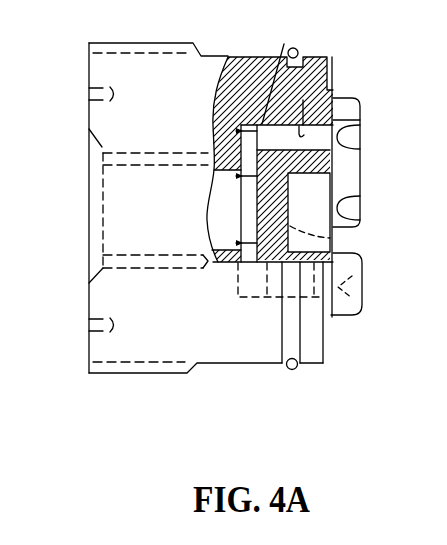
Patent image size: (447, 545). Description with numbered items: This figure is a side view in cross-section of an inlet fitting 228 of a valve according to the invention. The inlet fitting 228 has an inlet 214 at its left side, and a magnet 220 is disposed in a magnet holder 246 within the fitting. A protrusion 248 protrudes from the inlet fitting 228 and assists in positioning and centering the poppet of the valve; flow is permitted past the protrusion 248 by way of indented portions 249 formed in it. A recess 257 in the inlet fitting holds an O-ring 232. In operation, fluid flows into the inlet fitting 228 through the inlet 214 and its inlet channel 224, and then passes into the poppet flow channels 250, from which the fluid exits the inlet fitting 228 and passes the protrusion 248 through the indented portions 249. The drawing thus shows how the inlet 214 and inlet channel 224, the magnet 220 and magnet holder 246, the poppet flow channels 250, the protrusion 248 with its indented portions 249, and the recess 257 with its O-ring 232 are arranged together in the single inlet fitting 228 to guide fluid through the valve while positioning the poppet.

The inlet 214 is at (148, 203).
The inlet channel 224 is at (177, 227).
The inlet fitting 228 is at (217, 67).
The O-ring 232 is at (298, 51).
The poppet flow channels 250 is at (303, 100).
The magnet 220 is at (310, 188).
The indented portions 249 is at (340, 140).
The magnet holder 246 is at (302, 257).
The protrusion 248 is at (352, 297).
The recess 257 is at (291, 370).